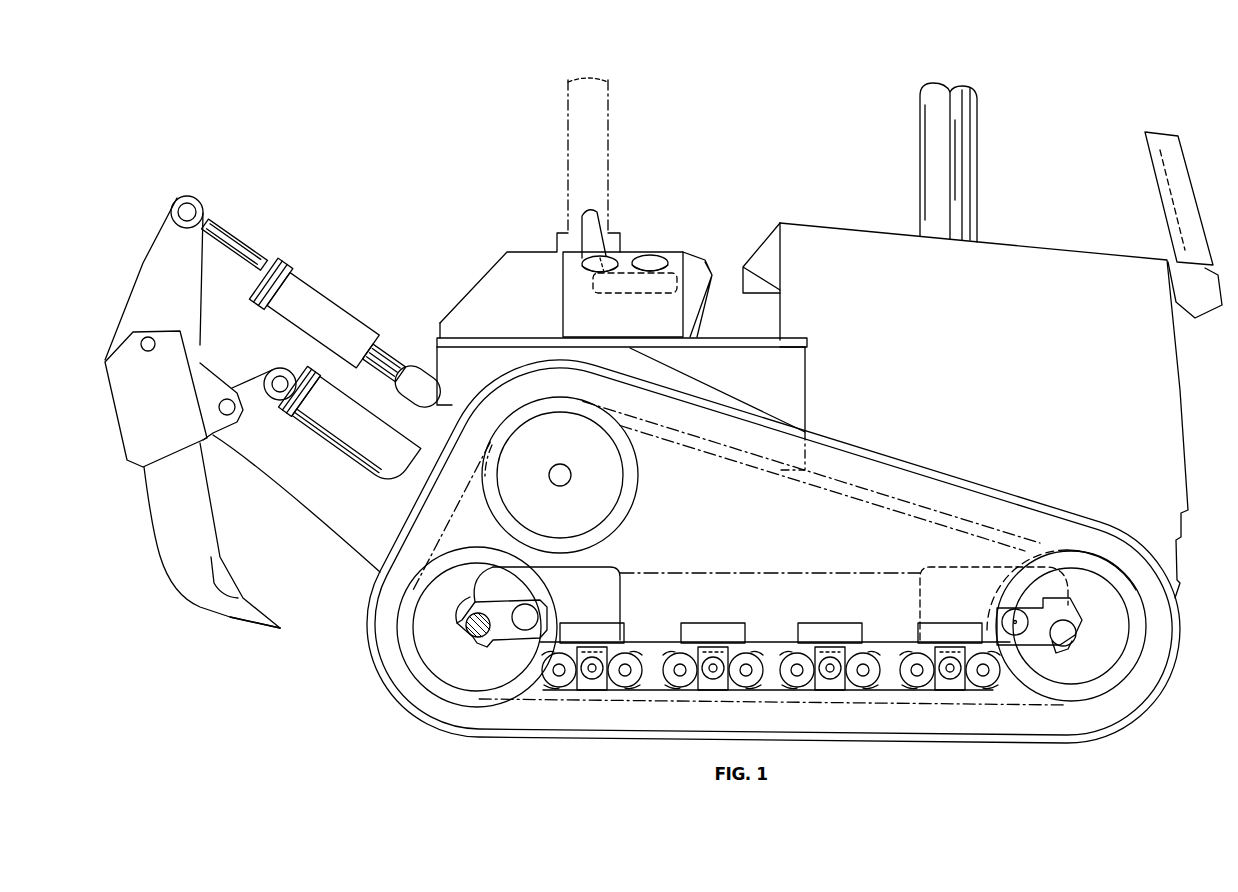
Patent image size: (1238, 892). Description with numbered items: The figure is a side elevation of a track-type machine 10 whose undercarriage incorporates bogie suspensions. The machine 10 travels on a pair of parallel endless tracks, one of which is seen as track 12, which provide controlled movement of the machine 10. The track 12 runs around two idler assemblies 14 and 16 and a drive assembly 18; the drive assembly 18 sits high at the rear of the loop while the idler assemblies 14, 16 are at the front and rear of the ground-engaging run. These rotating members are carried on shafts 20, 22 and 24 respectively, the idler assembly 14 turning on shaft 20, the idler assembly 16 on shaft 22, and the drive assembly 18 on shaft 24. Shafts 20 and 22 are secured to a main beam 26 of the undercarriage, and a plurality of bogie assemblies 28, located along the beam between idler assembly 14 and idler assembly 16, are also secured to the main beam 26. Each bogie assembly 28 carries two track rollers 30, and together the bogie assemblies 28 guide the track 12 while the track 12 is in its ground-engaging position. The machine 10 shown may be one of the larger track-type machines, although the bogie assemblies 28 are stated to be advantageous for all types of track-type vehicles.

The track-type machine 10 is at (891, 298).
The track 12 is at (1165, 641).
The idler assembly 14 is at (1080, 594).
The idler assembly 16 is at (520, 590).
The drive assembly 18 is at (620, 517).
The shaft 20 is at (1066, 640).
The shaft 22 is at (493, 598).
The shaft 24 is at (549, 477).
The main beam 26 is at (768, 612).
The bogie assembly 28 is at (610, 642).
The track roller 30 is at (575, 688).